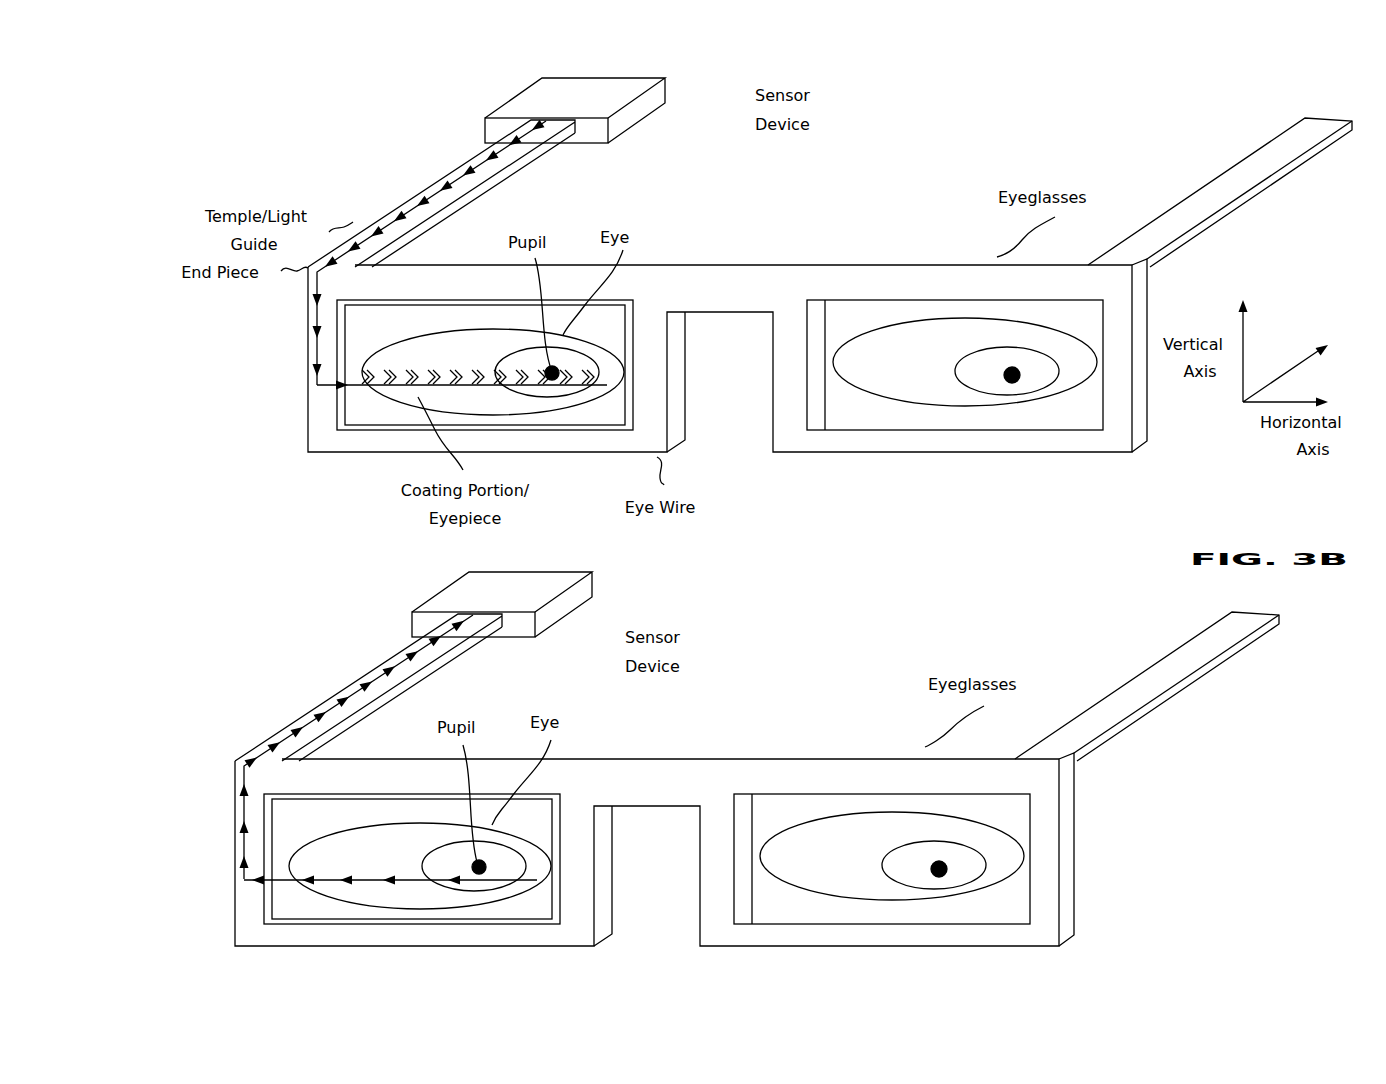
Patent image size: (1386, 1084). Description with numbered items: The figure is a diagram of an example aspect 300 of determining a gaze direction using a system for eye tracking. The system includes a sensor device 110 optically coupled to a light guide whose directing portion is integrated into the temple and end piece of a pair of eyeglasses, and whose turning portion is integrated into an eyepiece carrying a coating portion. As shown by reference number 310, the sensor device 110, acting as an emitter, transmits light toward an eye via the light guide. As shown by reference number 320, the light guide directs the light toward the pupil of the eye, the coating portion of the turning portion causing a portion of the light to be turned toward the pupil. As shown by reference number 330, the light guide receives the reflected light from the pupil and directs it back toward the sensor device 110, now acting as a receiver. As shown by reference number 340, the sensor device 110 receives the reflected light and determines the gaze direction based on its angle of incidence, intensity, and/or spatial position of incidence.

The example aspect 300 is at (213, 61).
The transmitting light toward an eye via the light guide 310 is at (376, 77).
The directing the light toward the pupil of the eye 320 is at (203, 424).
The directing the reflected light toward the sensor device 330 is at (142, 878).
The determining a gaze direction based on the received reflected light 340 is at (301, 544).
The sensor device 110 is at (665, 92).